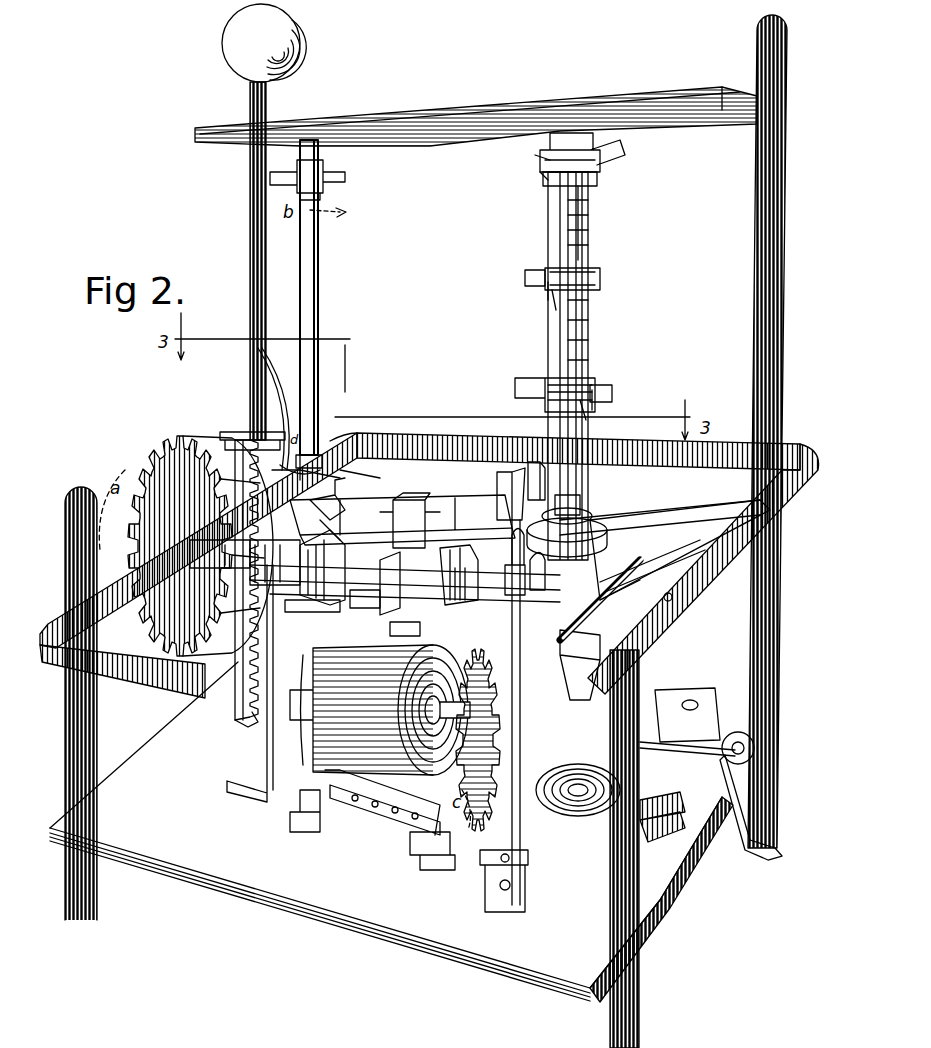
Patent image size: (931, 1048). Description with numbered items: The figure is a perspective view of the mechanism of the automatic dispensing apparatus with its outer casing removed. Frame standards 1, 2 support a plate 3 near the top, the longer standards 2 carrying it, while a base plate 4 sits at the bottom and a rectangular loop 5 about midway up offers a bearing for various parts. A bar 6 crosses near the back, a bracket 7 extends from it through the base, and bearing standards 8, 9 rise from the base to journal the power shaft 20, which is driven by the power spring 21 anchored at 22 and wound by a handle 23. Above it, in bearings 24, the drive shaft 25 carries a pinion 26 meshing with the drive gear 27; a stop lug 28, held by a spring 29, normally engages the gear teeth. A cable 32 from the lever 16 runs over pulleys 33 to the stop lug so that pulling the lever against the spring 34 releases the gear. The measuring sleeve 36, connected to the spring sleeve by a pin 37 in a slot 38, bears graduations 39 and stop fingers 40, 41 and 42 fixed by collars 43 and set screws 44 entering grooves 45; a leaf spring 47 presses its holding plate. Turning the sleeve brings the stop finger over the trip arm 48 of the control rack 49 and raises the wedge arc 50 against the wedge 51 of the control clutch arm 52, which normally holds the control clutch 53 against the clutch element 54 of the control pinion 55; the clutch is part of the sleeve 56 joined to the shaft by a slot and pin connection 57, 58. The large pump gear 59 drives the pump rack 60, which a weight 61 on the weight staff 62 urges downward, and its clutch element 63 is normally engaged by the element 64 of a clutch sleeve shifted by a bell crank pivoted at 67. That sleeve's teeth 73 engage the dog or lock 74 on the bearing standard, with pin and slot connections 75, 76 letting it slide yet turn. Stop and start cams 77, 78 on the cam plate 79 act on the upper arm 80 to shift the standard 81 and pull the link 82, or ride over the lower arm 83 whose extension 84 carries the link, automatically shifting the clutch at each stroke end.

The frame standard 1 is at (66, 500).
The frame standard 2 is at (791, 336).
The plate 3 is at (478, 110).
The base plate 4 is at (332, 905).
The rectangular loop 5 is at (712, 447).
The bar 6 is at (448, 498).
The bracket 7 is at (660, 539).
The bearing standard 8 is at (266, 762).
The bearing standard 9 is at (645, 790).
The lever 16 is at (512, 578).
The power shaft 20 is at (697, 742).
The power spring 21 is at (445, 648).
The anchor 22 is at (304, 816).
The handle 23 is at (735, 830).
The bearings 24 is at (678, 590).
The drive shaft 25 is at (652, 566).
The pinion 26 is at (536, 562).
The drive gear 27 is at (486, 824).
The stop lug 28 is at (592, 660).
The spring 29 is at (585, 818).
The cable 32 is at (522, 830).
The pulleys 33 is at (636, 585).
The spring 34 is at (640, 555).
The measuring sleeve 36 is at (546, 326).
The pin 37 is at (592, 179).
The slot 38 is at (590, 197).
The graduations 39 is at (592, 360).
The stop finger 40 is at (515, 380).
The stop finger 41 is at (598, 275).
The stop finger 42 is at (618, 155).
The collars 43 is at (548, 174).
The set screws 44 is at (546, 182).
The grooves 45 is at (548, 292).
The leaf spring 47 is at (580, 520).
The trip arm 48 is at (502, 496).
The control rack 49 is at (412, 492).
The wedge arc 50 is at (600, 480).
The wedge 51 is at (540, 458).
The control clutch arm 52 is at (465, 576).
The control clutch 53 is at (395, 630).
The clutch element 54 is at (388, 606).
The control pinion 55 is at (362, 606).
The sleeve 56 is at (405, 583).
The slot 57 is at (458, 602).
The pin 58 is at (470, 602).
The pump gear 59 is at (196, 442).
The pump rack 60 is at (236, 706).
The weight 61 is at (294, 32).
The weight staff 62 is at (252, 190).
The clutch element 63 is at (219, 554).
The clutch element 64 is at (229, 554).
The pivot 67 is at (348, 492).
The teeth 73 is at (338, 560).
The dog or lock 74 is at (314, 600).
The pin 75 is at (275, 562).
The slot 76 is at (288, 563).
The stop cam 77 is at (270, 348).
The start cam 78 is at (305, 452).
The cam plate 79 is at (236, 430).
The upper arm 80 is at (300, 178).
The standard 81 is at (318, 270).
The link 82 is at (330, 448).
The lower arm 83 is at (276, 468).
The extension 84 is at (385, 446).